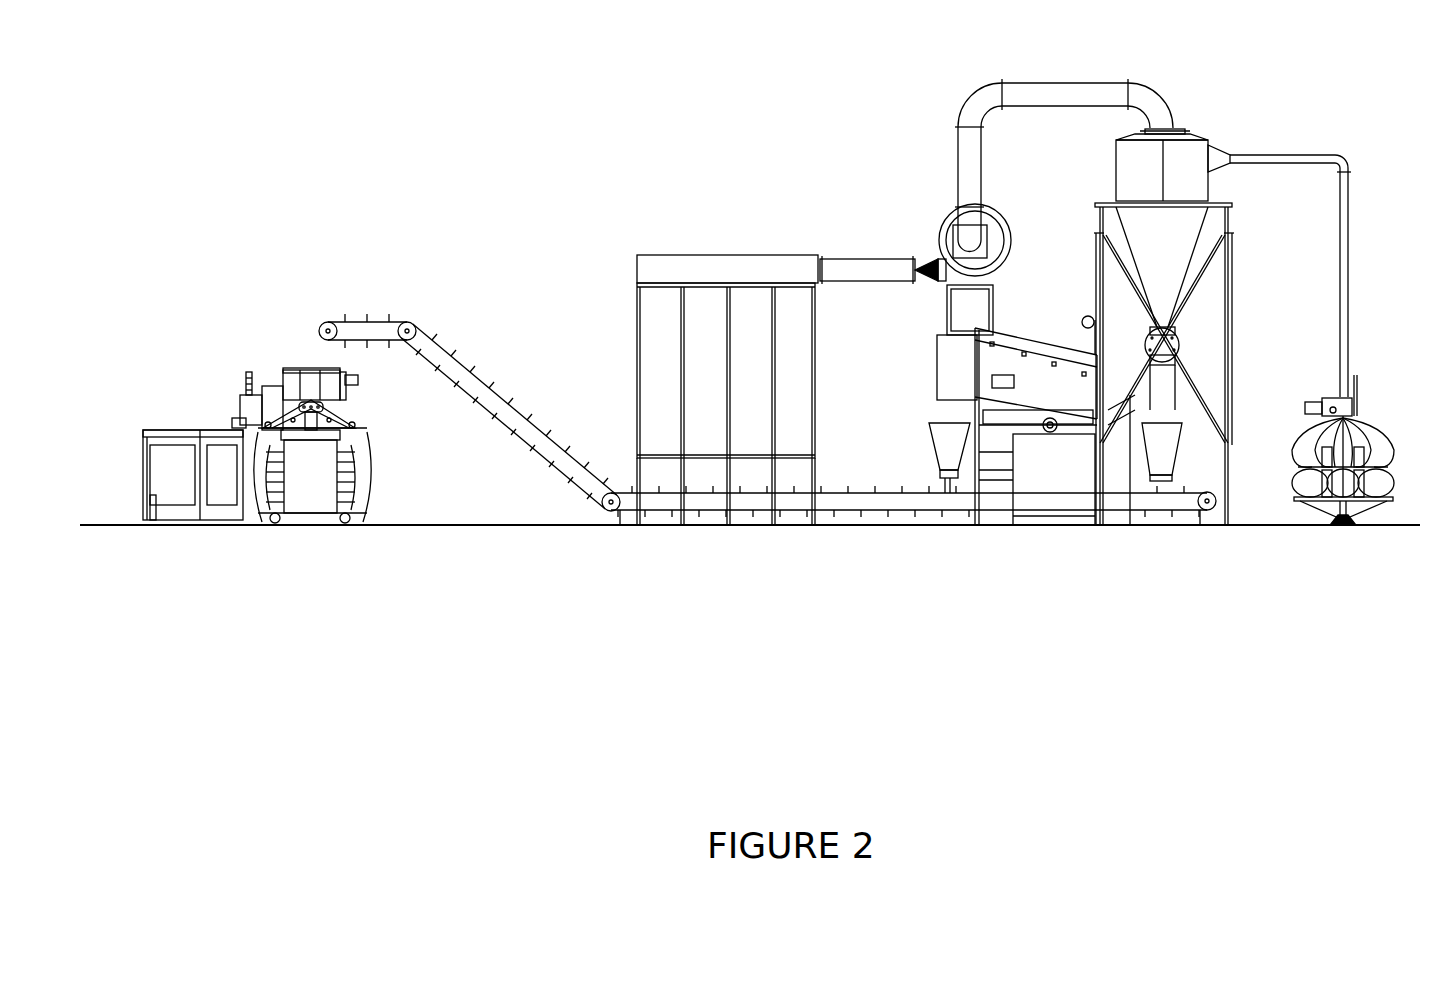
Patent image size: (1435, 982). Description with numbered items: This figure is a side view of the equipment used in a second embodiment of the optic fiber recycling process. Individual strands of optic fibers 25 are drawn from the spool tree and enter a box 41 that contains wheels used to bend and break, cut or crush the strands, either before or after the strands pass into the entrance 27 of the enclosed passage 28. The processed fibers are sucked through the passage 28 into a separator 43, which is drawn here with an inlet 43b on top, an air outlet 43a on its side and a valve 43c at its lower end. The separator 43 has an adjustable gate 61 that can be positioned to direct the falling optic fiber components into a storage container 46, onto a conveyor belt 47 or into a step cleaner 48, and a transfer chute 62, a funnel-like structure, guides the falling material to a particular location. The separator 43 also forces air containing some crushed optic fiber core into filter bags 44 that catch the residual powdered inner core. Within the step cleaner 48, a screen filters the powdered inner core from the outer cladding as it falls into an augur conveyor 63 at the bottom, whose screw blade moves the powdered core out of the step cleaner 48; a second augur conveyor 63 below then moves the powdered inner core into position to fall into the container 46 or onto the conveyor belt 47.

The optic fibers 25 is at (1363, 432).
The entrance 27 is at (1337, 418).
The enclosed passage 28 is at (973, 96).
The box 41 is at (1322, 399).
The separator 43 is at (1113, 173).
The cyclone air outlet 43a is at (1218, 157).
The cyclone inlet 43b is at (1172, 128).
The rotary valve 43c is at (1176, 354).
The filter bags 44 is at (660, 385).
The storage container 46 is at (619, 446).
The conveyor belt 47 is at (887, 492).
The step cleaner 48 is at (1047, 350).
The adjustable gate 61 is at (1140, 400).
The transfer chute 62 is at (945, 443).
The augur conveyor 63 is at (1035, 420).